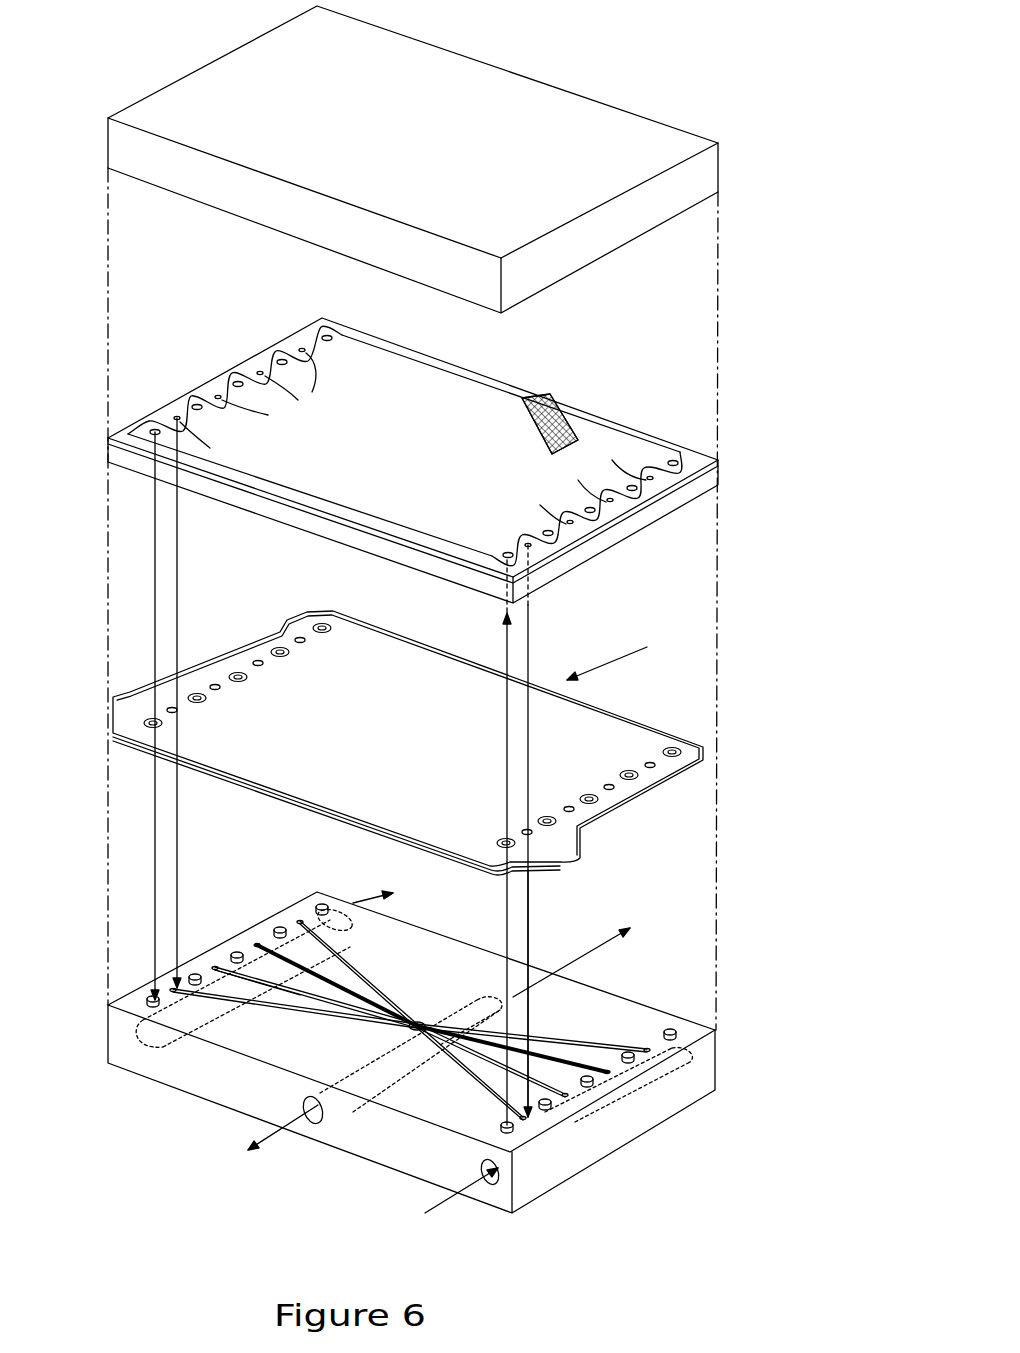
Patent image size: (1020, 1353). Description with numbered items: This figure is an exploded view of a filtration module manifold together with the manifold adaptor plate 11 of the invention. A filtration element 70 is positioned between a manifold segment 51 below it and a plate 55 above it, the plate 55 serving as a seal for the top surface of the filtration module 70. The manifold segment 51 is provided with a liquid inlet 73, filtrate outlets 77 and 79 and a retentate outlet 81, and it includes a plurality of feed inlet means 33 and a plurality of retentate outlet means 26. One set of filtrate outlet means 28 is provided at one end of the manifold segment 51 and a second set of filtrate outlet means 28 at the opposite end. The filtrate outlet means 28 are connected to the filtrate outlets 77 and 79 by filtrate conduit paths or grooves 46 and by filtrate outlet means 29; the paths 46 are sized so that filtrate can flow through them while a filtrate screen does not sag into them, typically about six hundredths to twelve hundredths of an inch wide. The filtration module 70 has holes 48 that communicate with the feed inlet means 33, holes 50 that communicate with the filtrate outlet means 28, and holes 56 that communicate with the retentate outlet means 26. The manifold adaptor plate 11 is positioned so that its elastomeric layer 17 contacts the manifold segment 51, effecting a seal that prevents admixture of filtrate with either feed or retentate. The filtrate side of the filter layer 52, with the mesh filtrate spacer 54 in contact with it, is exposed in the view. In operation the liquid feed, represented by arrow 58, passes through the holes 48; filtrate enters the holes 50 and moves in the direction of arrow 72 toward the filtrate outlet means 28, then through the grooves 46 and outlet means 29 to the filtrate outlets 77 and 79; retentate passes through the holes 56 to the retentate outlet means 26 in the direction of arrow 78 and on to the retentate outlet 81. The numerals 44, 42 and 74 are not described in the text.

The plate 55 is at (588, 99).
The filter layer 52 is at (413, 460).
The filtrate spacer 54 is at (535, 400).
The holes 56 is at (325, 336).
The holes 50 is at (180, 419).
The holes 48 is at (673, 468).
The filtration element 70 is at (720, 460).
The arrow 78 is at (154, 568).
The elastomeric layer 17 is at (704, 765).
The manifold adaptor plate 11 is at (631, 651).
The arrow 58 is at (506, 946).
The arrow 72 is at (529, 882).
The manifold segment 51 is at (186, 1092).
The filtrate outlet means 29 is at (418, 1021).
The filtrate outlet means 28 is at (257, 943).
The filtrate conduit paths 46 is at (356, 996).
The channel 44 is at (290, 990).
The retentate outlet means 26 is at (322, 905).
The feed inlet means 33 is at (670, 1030).
The port 42 is at (505, 1123).
The recess 74 is at (510, 1004).
The retentate outlet 81 is at (355, 903).
The filtrate outlet 79 is at (633, 930).
The filtrate outlet 77 is at (314, 1124).
The liquid inlet 73 is at (490, 1185).